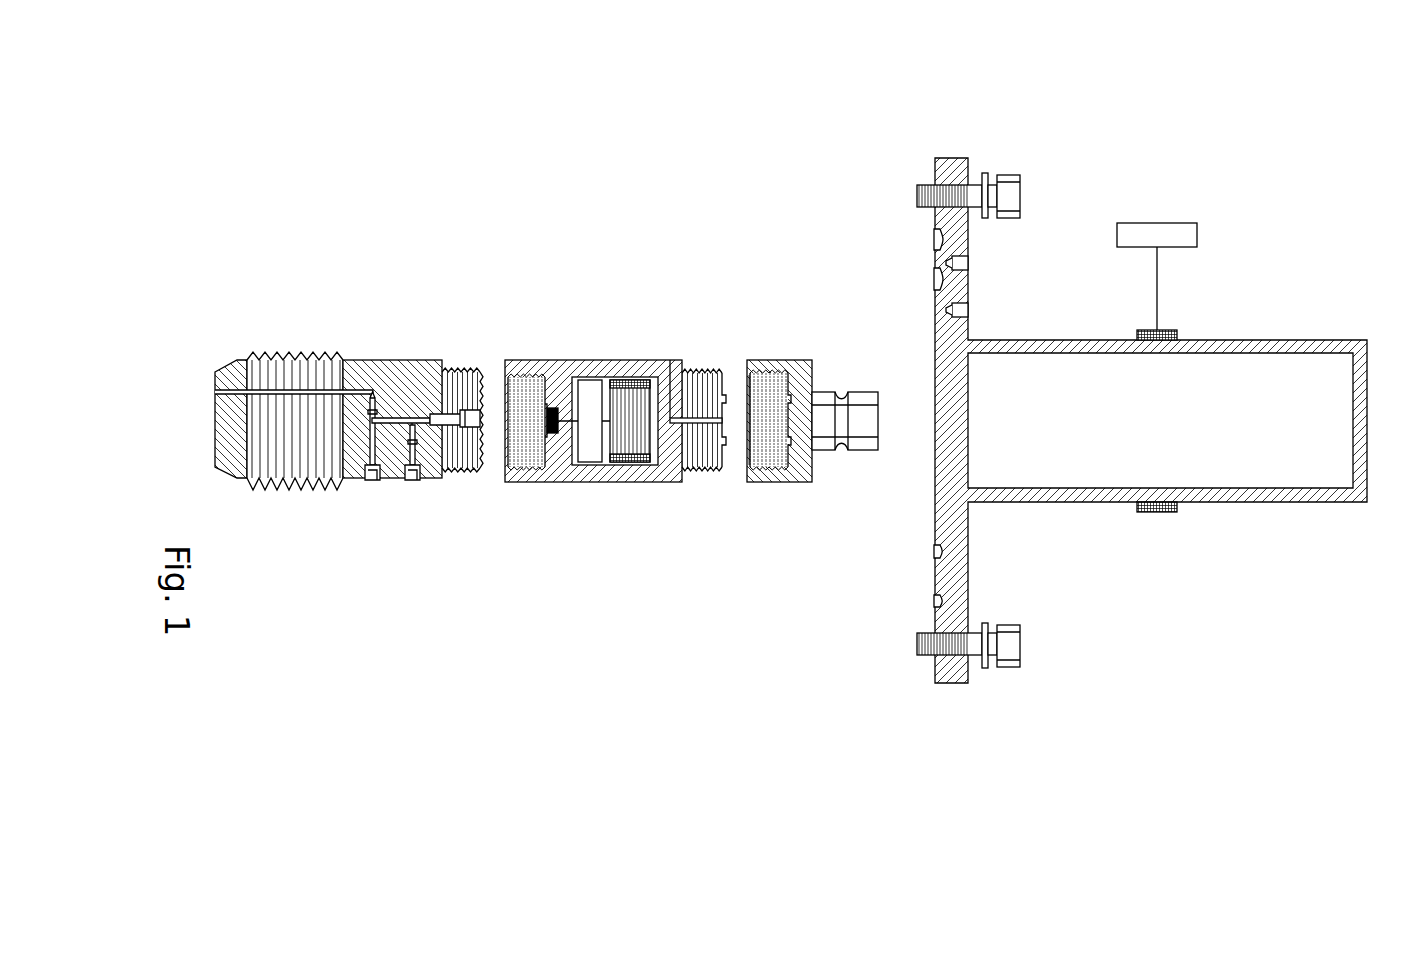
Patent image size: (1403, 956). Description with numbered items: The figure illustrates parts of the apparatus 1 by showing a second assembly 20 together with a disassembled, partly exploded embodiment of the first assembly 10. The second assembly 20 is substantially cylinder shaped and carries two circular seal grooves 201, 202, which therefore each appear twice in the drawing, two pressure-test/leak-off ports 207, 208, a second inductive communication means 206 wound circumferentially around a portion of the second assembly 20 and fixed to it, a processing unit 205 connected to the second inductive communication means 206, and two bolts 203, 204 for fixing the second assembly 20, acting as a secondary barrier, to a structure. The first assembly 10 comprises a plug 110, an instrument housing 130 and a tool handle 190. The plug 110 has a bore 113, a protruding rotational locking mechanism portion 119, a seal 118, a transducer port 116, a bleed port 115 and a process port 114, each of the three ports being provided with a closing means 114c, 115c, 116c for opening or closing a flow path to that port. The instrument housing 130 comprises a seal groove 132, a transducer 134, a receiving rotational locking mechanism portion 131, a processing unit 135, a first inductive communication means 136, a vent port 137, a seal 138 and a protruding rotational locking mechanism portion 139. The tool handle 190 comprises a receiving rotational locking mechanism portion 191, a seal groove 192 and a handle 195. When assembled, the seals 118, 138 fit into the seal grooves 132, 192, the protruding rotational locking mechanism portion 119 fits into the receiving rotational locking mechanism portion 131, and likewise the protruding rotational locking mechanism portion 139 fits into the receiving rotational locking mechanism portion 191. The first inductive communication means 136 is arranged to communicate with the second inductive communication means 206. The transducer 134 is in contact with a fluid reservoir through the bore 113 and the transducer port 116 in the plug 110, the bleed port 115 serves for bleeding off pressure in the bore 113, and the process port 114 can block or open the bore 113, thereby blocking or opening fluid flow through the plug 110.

The apparatus 1 is at (952, 140).
The first assembly 10 is at (535, 272).
The second assembly 20 is at (1185, 193).
The plug 110 is at (298, 343).
The bore 113 is at (215, 390).
The process port 114 is at (368, 480).
The closing means 114c is at (440, 400).
The bleed port 115 is at (388, 478).
The closing means 115c is at (420, 478).
The transducer port 116 is at (475, 425).
The closing means 116c is at (470, 428).
The seal 118 is at (490, 372).
The protruding rotational locking mechanism portion 119 is at (453, 360).
The instrument housing 130 is at (587, 343).
The receiving rotational locking mechanism portion 131 is at (528, 482).
The seal groove 132 is at (545, 405).
The transducer 134 is at (575, 470).
The processing unit 135 is at (582, 482).
The first inductive communication means 136 is at (650, 482).
The vent port 137 is at (670, 418).
The seal 138 is at (728, 372).
The protruding rotational locking mechanism portion 139 is at (703, 358).
The tool handle 190 is at (795, 353).
The receiving rotational locking mechanism portion 191 is at (765, 482).
The seal groove 192 is at (742, 377).
The handle 195 is at (830, 393).
The seal groove 201 is at (937, 283).
The seal groove 202 is at (940, 238).
The bolt 203 is at (1020, 623).
The bolt 204 is at (1020, 180).
The processing unit 205 is at (1197, 235).
The second inductive communication means 206 is at (1172, 330).
The pressure-test/leak-off port 207 is at (968, 304).
The pressure-test/leak-off port 208 is at (968, 263).